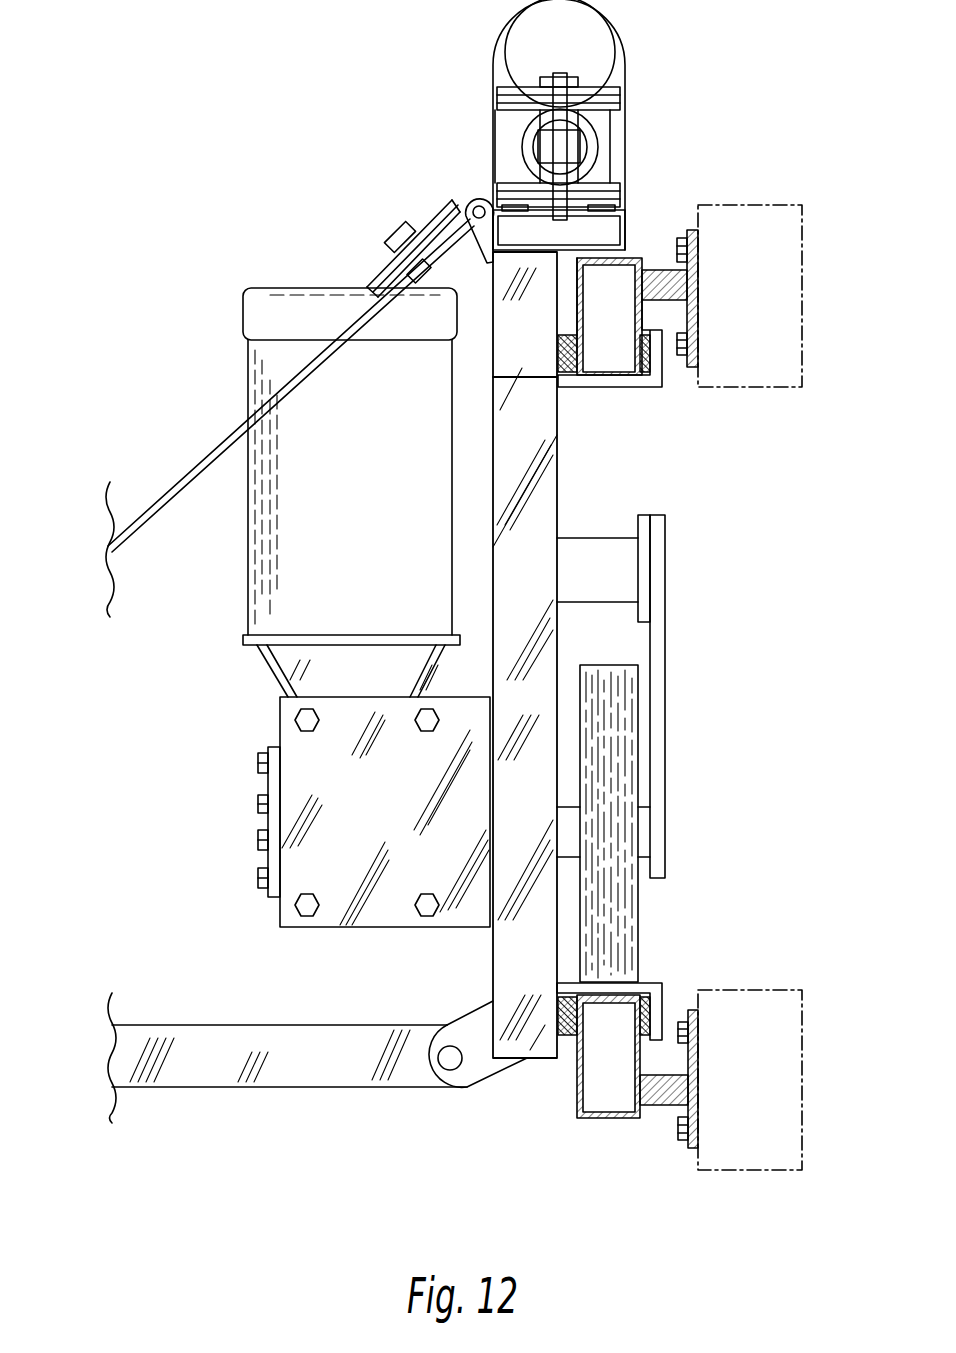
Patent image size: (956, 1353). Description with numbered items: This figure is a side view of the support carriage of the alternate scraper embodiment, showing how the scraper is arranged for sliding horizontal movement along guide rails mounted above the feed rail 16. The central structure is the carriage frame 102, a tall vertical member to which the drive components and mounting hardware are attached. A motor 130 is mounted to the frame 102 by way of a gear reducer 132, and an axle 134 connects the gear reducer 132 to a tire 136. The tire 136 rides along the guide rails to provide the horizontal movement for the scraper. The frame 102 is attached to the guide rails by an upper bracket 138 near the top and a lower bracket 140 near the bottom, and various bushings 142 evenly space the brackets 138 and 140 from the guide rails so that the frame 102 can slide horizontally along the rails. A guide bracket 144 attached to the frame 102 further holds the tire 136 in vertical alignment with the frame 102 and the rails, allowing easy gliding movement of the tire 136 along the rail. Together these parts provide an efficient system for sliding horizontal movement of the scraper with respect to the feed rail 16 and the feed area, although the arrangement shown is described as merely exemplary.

The feed rail 16 is at (608, 1113).
The carriage frame 102 is at (545, 490).
The motor 130 is at (265, 322).
The gear reducer 132 is at (292, 733).
The axle 134 is at (570, 812).
The tire 136 is at (618, 910).
The upper bracket 138 is at (655, 390).
The lower bracket 140 is at (657, 985).
The bushings 142 is at (558, 378).
The guide bracket 144 is at (608, 558).